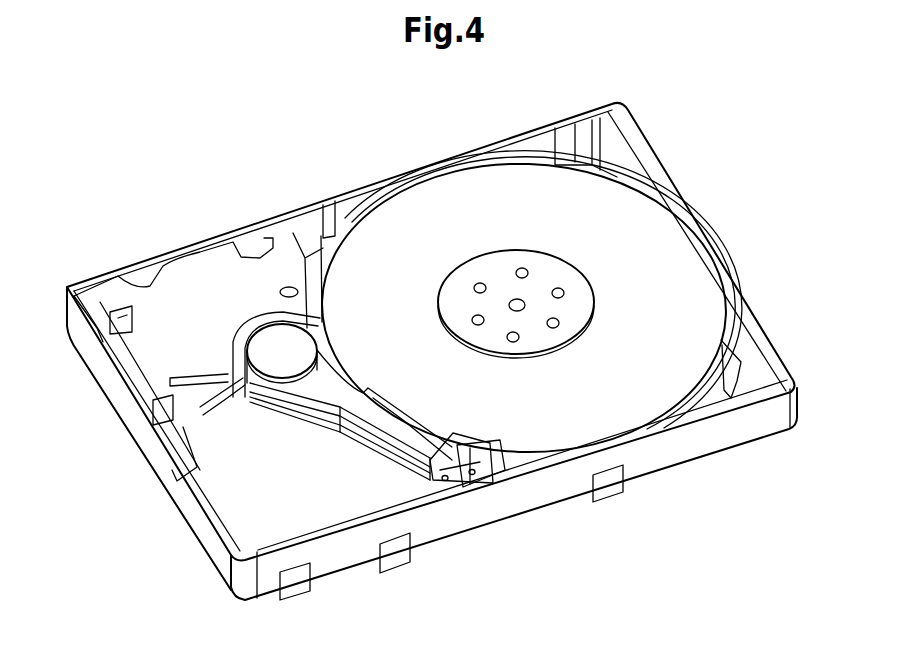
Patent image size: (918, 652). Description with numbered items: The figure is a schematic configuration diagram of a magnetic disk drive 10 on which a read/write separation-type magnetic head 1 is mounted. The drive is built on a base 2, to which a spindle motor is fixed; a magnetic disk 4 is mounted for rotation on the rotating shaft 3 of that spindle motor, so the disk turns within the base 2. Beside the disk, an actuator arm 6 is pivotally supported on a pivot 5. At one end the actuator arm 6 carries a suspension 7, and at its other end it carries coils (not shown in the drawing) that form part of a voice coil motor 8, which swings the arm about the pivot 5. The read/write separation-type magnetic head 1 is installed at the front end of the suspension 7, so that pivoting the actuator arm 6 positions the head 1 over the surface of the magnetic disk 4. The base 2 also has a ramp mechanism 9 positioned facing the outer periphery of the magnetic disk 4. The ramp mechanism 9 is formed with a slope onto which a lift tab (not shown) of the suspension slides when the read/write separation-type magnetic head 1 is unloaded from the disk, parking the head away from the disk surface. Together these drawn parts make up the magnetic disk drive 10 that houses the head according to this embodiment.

The read/write separation-type magnetic head 1 is at (433, 447).
The base 2 is at (692, 452).
The rotating shaft 3 is at (558, 273).
The magnetic disk 4 is at (697, 287).
The pivot 5 is at (307, 390).
The actuator arm 6 is at (267, 363).
The suspension 7 is at (390, 435).
The voice coil motor 8 is at (203, 283).
The ramp mechanism 9 is at (493, 452).
The magnetic disk drive 10 is at (372, 171).